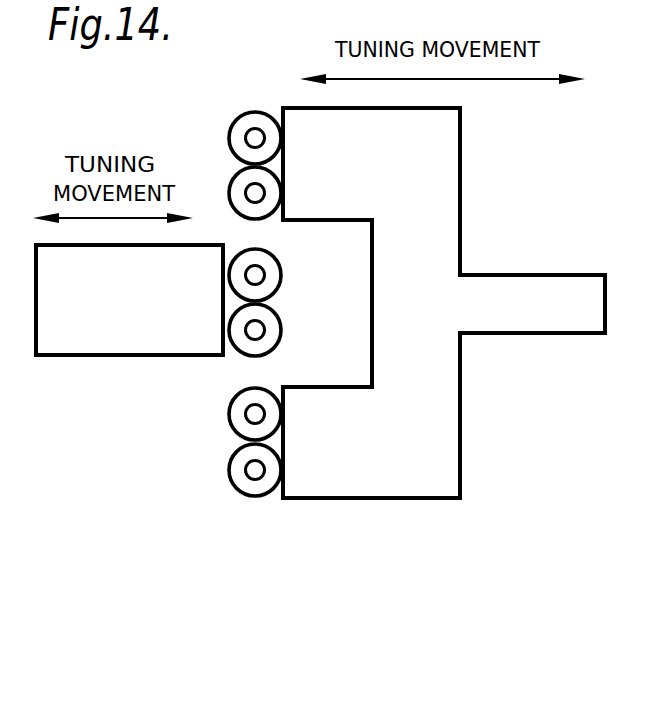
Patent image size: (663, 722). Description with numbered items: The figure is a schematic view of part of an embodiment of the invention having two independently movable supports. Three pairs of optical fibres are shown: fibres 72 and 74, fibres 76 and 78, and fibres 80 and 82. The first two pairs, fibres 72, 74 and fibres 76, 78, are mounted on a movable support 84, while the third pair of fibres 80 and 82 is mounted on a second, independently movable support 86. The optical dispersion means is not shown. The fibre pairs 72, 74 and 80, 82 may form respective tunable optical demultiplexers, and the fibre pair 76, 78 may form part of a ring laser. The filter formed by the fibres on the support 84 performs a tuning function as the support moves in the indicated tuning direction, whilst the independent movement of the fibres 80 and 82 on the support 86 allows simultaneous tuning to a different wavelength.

The fibre 72 is at (242, 114).
The fibre 74 is at (229, 470).
The fibre 76 is at (233, 178).
The fibre 78 is at (229, 407).
The fibre 80 is at (280, 267).
The fibre 82 is at (280, 324).
The movable support 84 is at (460, 183).
The second, independently movable support 86 is at (68, 358).